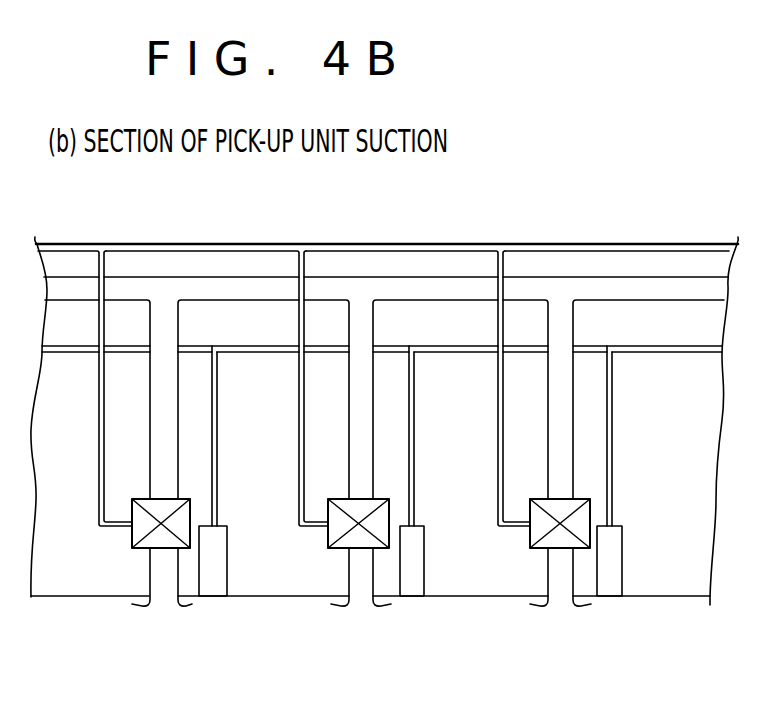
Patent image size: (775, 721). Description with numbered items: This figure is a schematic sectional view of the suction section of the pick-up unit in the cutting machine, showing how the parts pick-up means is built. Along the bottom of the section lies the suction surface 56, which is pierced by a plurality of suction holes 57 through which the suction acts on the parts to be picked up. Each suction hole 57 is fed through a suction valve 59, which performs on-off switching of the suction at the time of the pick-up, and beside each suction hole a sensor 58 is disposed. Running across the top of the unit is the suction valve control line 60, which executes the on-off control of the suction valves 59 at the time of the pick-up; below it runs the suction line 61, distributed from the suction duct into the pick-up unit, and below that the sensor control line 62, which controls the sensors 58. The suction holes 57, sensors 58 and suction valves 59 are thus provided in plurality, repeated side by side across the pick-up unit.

The suction surface 56 is at (647, 600).
The suction holes 57 is at (163, 602).
The sensors 58 is at (213, 590).
The suction valves 59 is at (132, 549).
The suction valve control line 60 is at (193, 245).
The suction line 61 is at (337, 277).
The sensor control line 62 is at (428, 346).